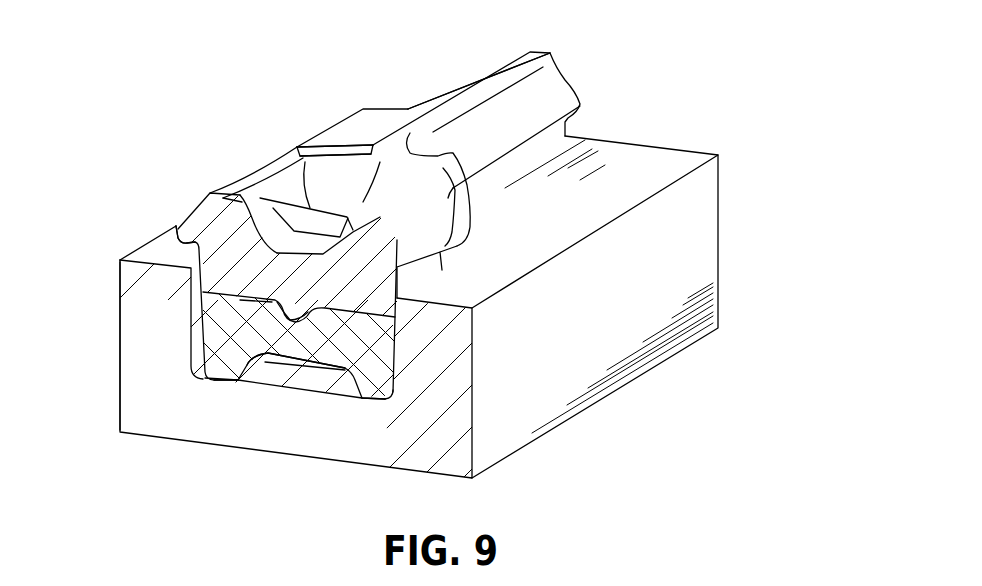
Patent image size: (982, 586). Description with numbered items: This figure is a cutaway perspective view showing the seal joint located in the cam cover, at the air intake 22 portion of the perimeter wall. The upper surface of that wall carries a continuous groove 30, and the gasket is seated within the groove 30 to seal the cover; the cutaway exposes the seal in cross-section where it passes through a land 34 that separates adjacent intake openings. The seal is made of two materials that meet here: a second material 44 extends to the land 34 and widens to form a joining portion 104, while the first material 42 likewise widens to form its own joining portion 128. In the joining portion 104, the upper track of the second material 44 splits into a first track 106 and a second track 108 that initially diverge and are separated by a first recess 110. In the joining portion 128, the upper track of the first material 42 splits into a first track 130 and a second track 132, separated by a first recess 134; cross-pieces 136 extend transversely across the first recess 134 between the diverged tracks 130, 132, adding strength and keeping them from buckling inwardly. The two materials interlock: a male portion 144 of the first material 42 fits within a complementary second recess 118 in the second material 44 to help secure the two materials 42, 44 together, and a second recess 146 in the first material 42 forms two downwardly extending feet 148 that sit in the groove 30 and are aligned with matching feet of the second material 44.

The air intake 22 is at (229, 433).
The groove 30 is at (357, 402).
The land 34 is at (133, 342).
The first material 42 is at (225, 182).
The second material 44 is at (552, 82).
The joining portion 104 is at (338, 131).
The first track 106 is at (303, 147).
The second track 108 is at (458, 176).
The first recess 110 is at (367, 157).
The second recess 118 is at (300, 322).
The joining portion 128 is at (157, 208).
The first track 130 is at (243, 168).
The second track 132 is at (460, 243).
The first recess 134 is at (215, 190).
The cross-pieces 136 is at (330, 212).
The male portion 144 is at (265, 320).
The second recess 146 is at (300, 378).
The feet 148 is at (226, 372).